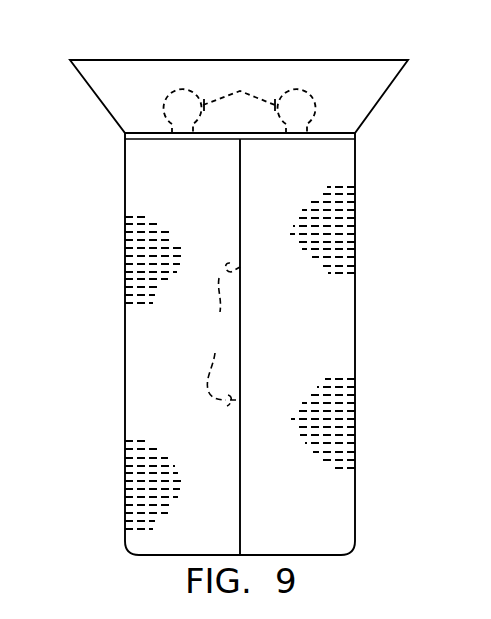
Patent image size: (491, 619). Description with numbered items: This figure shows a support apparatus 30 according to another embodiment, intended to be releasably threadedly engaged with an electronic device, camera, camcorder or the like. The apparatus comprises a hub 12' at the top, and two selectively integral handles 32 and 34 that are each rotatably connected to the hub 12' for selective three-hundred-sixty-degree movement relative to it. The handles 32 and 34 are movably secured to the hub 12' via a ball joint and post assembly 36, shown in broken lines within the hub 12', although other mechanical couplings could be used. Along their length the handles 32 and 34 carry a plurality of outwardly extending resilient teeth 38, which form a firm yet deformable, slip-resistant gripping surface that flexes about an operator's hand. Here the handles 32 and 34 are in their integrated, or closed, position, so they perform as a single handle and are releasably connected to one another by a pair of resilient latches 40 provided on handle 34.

The hub 12' is at (239, 71).
The support apparatus 30 is at (82, 486).
The handle 32 is at (160, 338).
The handle 34 is at (323, 325).
The ball joint and post assembly 36 is at (240, 92).
The resilient teeth 38 is at (140, 266).
The resilient latches 40 is at (221, 334).